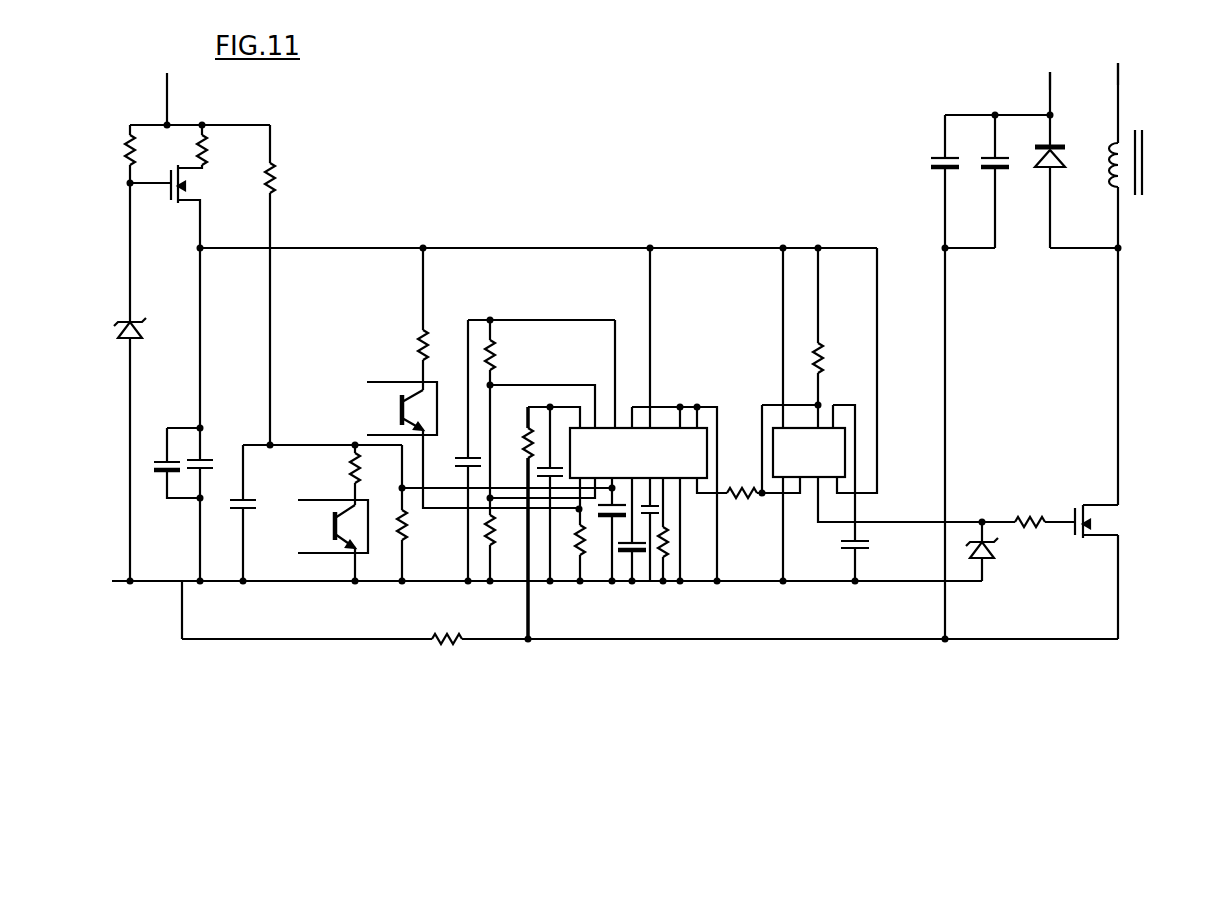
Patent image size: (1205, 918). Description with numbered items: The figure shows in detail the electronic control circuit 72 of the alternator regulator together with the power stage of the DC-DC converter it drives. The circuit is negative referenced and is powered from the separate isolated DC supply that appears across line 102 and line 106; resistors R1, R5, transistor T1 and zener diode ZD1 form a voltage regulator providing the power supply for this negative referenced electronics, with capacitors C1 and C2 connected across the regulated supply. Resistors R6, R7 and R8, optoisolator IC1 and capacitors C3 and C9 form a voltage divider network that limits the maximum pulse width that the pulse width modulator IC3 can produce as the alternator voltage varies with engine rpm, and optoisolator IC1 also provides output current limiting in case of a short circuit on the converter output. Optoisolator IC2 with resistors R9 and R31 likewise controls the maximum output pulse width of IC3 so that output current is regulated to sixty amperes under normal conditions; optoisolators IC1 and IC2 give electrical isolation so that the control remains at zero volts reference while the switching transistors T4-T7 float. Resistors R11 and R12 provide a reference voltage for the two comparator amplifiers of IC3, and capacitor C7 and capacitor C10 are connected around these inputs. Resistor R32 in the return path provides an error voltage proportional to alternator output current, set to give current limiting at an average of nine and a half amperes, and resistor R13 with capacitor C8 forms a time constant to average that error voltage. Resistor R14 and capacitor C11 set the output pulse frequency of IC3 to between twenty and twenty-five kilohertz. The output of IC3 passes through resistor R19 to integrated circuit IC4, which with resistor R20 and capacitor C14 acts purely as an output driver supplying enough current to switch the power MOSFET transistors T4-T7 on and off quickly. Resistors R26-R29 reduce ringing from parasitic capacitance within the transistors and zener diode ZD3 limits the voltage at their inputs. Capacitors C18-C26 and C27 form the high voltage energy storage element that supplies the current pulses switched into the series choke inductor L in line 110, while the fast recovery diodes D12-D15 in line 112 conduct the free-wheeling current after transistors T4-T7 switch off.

The line 106 is at (169, 96).
The electronic control circuit 72 is at (656, 106).
The line 112 is at (1050, 90).
The line 110 is at (1120, 84).
The line 102 is at (143, 585).
The resistor R1 is at (146, 151).
The resistor R5 is at (221, 151).
The resistor R6 is at (288, 179).
The transistor T1 is at (196, 185).
The zener diode ZD1 is at (132, 322).
The capacitor C1 is at (166, 463).
The capacitor C2 is at (213, 448).
The capacitor C3 is at (260, 489).
The resistor R7 is at (336, 464).
The optoisolator IC1 is at (324, 526).
The resistor R8 is at (421, 530).
The resistor R9 is at (418, 345).
The optoisolator IC2 is at (394, 408).
The capacitor C7 is at (460, 458).
The resistor R11 is at (515, 357).
The resistor R12 is at (506, 531).
The resistor R13 is at (514, 440).
The capacitor C8 is at (534, 472).
The PWM integrated circuit IC3 is at (638, 453).
The resistor R31 is at (580, 558).
The capacitor C9 is at (612, 520).
The capacitor C10 is at (632, 556).
The capacitor C11 is at (658, 508).
The resistor R14 is at (663, 559).
The resistor R19 is at (745, 512).
The output driver IC4 is at (809, 452).
The resistor R20 is at (841, 357).
The capacitor C14 is at (881, 541).
The resistor R32 is at (440, 648).
The capacitors C18-C26 is at (943, 158).
The capacitor C27 is at (1010, 183).
The fast recovery diodes D12-D15 is at (1058, 152).
The series pass inductor L is at (1144, 162).
The resistors R26-R29 is at (1021, 501).
The switching transistors T4-T7 is at (1108, 522).
The zener diode ZD3 is at (992, 552).